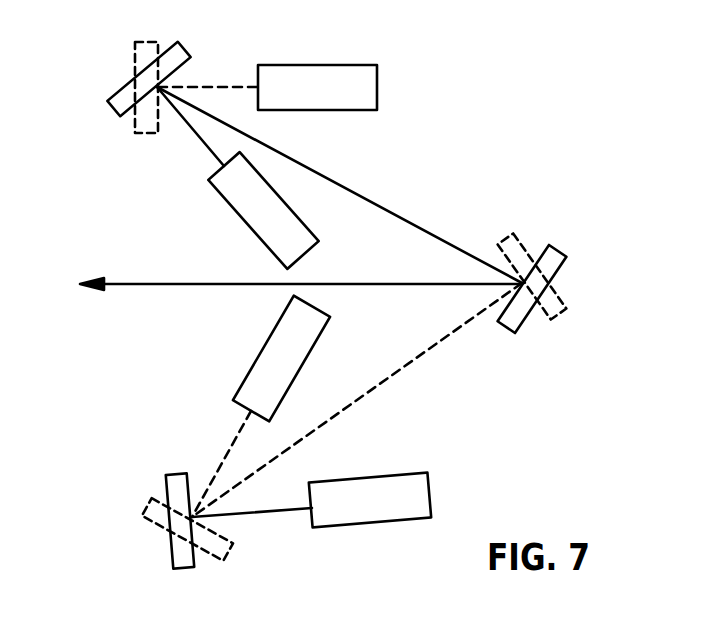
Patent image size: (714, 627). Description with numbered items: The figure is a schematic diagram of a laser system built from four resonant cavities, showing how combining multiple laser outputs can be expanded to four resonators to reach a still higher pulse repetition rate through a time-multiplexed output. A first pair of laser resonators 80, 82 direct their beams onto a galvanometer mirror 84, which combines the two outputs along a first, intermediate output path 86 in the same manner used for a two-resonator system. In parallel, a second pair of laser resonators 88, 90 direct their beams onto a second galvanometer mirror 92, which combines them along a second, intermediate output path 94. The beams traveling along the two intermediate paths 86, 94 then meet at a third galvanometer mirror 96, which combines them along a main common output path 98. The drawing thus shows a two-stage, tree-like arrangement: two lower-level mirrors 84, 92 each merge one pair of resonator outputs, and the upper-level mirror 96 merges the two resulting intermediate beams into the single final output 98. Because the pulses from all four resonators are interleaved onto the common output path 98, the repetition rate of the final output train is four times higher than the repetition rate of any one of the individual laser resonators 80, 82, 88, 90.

The laser resonator 80 is at (295, 65).
The laser resonator 82 is at (300, 215).
The galvanometer mirror 84 is at (185, 42).
The first intermediate output path 86 is at (370, 200).
The laser resonator 88 is at (310, 357).
The laser resonator 90 is at (367, 478).
The second galvanometer mirror 92 is at (172, 545).
The second intermediate output path 94 is at (403, 367).
The third galvanometer mirror 96 is at (562, 270).
The main common output path 98 is at (135, 284).